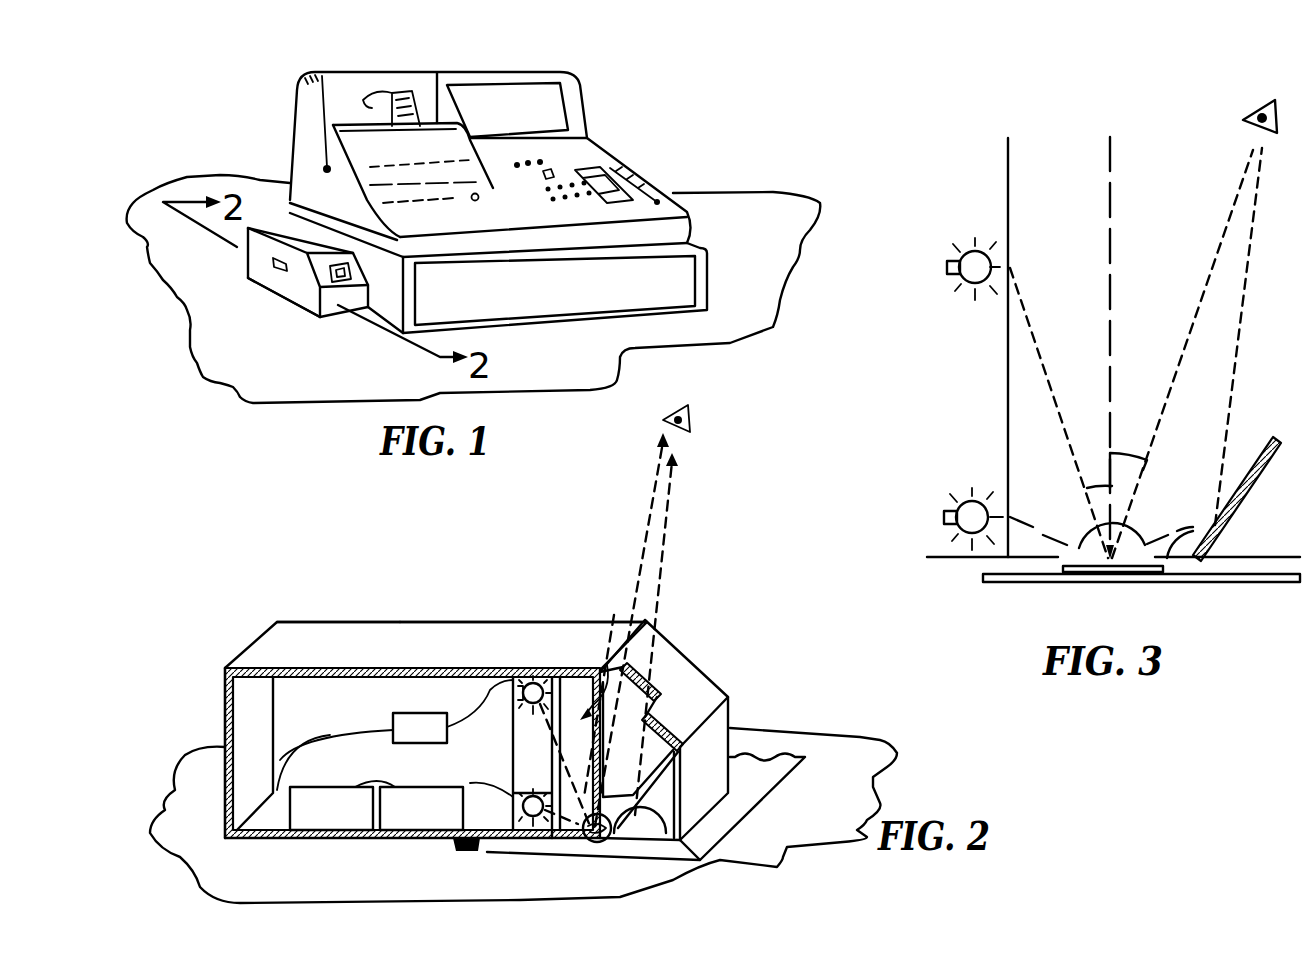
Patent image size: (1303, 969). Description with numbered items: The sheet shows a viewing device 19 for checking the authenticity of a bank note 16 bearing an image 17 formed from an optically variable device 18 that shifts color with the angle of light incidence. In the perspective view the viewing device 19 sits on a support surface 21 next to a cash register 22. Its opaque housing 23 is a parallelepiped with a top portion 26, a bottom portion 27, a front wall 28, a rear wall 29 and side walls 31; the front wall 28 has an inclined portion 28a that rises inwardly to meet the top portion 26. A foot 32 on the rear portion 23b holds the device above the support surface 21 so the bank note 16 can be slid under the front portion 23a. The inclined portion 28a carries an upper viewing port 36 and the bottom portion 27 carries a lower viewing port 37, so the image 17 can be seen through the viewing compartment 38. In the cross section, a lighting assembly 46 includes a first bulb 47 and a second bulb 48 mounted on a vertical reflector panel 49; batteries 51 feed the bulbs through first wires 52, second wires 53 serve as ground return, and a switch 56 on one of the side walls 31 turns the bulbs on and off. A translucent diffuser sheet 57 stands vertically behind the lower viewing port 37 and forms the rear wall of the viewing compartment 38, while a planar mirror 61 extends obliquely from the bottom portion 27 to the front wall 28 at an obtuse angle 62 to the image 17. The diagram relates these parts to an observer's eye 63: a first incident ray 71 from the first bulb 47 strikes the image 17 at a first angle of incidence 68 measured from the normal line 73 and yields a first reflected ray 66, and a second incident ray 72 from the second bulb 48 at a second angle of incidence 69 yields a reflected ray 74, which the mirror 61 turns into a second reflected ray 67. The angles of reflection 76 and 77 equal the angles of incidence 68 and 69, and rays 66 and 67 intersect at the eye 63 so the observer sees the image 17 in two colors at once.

In FIG. 2, the bank note 16 is at (773, 767).
In FIG. 3, the bank note 16 is at (1288, 584).
In FIG. 2, the image 17 is at (595, 847).
In FIG. 2, the optically variable device 18 is at (640, 840).
In FIG. 3, the optically variable device 18 is at (1168, 575).
In FIG. 1, the viewing device 19 is at (238, 268).
In FIG. 2, the viewing device 19 is at (358, 562).
In FIG. 1, the support surface 21 is at (796, 219).
In FIG. 2, the support surface 21 is at (217, 847).
In FIG. 1, the cash register 22 is at (583, 97).
In FIG. 1, the housing 23 is at (307, 303).
In FIG. 2, the housing 23 is at (549, 616).
In FIG. 2, the front portion 23a is at (607, 632).
In FIG. 2, the rear portion 23b is at (340, 622).
In FIG. 2, the top portion 26 is at (453, 670).
In FIG. 2, the bottom portion 27 is at (300, 840).
In FIG. 3, the bottom portion 27 is at (937, 557).
In FIG. 2, the front wall 28 is at (713, 727).
In FIG. 2, the inclined portion 28a is at (716, 626).
In FIG. 2, the rear wall 29 is at (225, 720).
In FIG. 2, the side walls 31 is at (332, 711).
In FIG. 2, the foot 32 is at (461, 845).
In FIG. 1, the upper viewing port 36 is at (337, 282).
In FIG. 2, the upper viewing port 36 is at (652, 697).
In FIG. 2, the lower viewing port 37 is at (700, 858).
In FIG. 2, the viewing compartment 38 is at (650, 720).
In FIG. 2, the lighting assembly 46 is at (593, 672).
In FIG. 2, the first bulb 47 is at (533, 682).
In FIG. 3, the first bulb 47 is at (970, 250).
In FIG. 2, the second bulb 48 is at (525, 820).
In FIG. 3, the second bulb 48 is at (970, 500).
In FIG. 2, the reflector panel 49 is at (518, 693).
In FIG. 2, the batteries 51 is at (378, 787).
In FIG. 2, the first wires 52 is at (485, 811).
In FIG. 2, the second wires 53 is at (380, 736).
In FIG. 1, the switch 56 is at (277, 275).
In FIG. 2, the switch 56 is at (417, 713).
In FIG. 2, the diffuser sheet 57 is at (548, 840).
In FIG. 3, the diffuser sheet 57 is at (1007, 166).
In FIG. 2, the mirror 61 is at (715, 779).
In FIG. 3, the mirror 61 is at (1267, 458).
In FIG. 3, the obtuse angle 62 is at (1207, 532).
In FIG. 2, the eye 63 is at (692, 416).
In FIG. 3, the eye 63 is at (1250, 114).
In FIG. 2, the first reflected ray 66 is at (650, 498).
In FIG. 3, the first reflected ray 66 is at (1222, 253).
In FIG. 2, the second reflected ray 67 is at (665, 498).
In FIG. 3, the second reflected ray 67 is at (1255, 252).
In FIG. 3, the first angle of incidence 68 is at (1088, 488).
In FIG. 3, the second angle of incidence 69 is at (1080, 550).
In FIG. 3, the first incident ray 71 is at (1037, 340).
In FIG. 3, the second incident ray 72 is at (1057, 538).
In FIG. 3, the normal line 73 is at (1112, 168).
In FIG. 3, the reflected ray 74 is at (1193, 526).
In FIG. 3, the first angle of reflection 76 is at (1138, 452).
In FIG. 3, the second angle of reflection 77 is at (1140, 536).